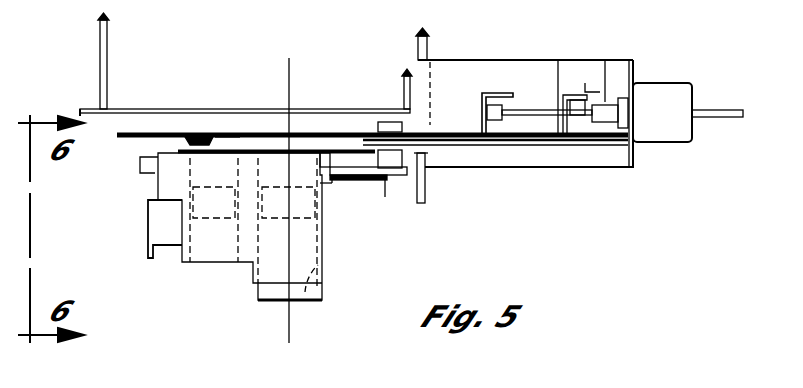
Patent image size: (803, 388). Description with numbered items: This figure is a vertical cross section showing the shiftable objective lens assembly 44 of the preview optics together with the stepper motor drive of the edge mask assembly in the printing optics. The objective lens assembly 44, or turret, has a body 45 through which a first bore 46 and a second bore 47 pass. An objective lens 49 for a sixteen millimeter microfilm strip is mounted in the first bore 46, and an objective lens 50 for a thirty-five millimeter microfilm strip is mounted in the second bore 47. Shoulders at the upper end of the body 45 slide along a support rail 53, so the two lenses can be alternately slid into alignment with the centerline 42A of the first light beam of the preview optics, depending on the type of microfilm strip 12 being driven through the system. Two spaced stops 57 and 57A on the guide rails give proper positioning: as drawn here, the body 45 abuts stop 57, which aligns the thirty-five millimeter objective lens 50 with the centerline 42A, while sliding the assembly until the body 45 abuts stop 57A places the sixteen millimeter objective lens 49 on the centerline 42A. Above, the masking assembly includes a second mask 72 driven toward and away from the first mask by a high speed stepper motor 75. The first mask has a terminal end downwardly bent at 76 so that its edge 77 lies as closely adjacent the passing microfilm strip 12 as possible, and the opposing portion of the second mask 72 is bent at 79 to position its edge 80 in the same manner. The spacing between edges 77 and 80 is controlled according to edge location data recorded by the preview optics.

The microfilm strip 12 is at (183, 143).
The centerline of the first light beam 42A is at (288, 313).
The objective lens assembly 44 is at (330, 245).
The body 45 is at (322, 275).
The first bore 46 is at (238, 243).
The second bore 47 is at (303, 300).
The objective lens 49 is at (203, 215).
The objective lens 50 is at (302, 203).
The support rail 53 is at (396, 176).
The stop 57 is at (145, 174).
The stop 57A is at (397, 158).
The second mask 72 is at (264, 128).
The stepper motor 75 is at (665, 140).
The downwardly bent terminal end 76 is at (360, 146).
The edge 77 is at (352, 149).
The bend 79 is at (213, 142).
The edge 80 is at (218, 143).